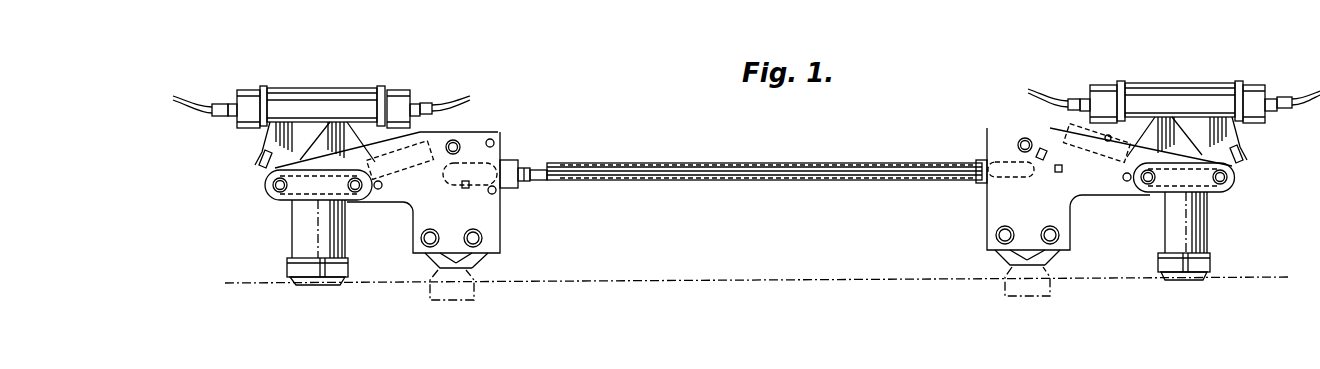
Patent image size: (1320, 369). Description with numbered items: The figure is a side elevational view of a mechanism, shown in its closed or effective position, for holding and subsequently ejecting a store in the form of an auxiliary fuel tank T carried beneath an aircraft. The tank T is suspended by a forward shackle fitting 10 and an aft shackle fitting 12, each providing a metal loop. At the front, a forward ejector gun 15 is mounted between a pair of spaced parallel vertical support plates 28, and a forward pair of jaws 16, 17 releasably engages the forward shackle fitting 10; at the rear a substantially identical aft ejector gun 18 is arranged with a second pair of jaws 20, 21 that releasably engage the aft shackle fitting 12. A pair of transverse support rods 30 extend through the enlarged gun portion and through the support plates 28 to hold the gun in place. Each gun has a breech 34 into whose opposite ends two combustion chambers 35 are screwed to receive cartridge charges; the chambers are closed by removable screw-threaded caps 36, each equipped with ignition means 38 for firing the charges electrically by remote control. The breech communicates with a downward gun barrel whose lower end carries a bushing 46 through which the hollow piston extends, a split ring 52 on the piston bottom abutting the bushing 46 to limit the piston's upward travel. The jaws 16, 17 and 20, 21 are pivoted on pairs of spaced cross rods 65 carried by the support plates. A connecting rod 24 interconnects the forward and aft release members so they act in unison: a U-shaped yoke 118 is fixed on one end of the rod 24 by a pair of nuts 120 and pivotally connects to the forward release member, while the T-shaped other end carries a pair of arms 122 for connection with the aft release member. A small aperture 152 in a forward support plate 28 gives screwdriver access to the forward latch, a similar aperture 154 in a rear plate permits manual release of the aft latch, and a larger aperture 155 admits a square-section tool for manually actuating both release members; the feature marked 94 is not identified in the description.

The auxiliary fuel tank T is at (767, 282).
The forward shackle fitting 10 is at (478, 275).
The aft shackle fitting 12 is at (1012, 272).
The forward ejector gun 15 is at (329, 82).
The forward jaw 16 is at (435, 263).
The forward jaw 17 is at (485, 252).
The aft ejector gun 18 is at (1167, 80).
The aft jaw 20 is at (1007, 258).
The aft jaw 21 is at (1045, 257).
The connecting rod 24 is at (738, 162).
The vertical support plates 28 is at (501, 141).
The transverse support rods 30 is at (280, 190).
The breech 34 is at (357, 94).
The combustion chambers 35 is at (264, 92).
The screw-threaded caps 36 is at (248, 92).
The ignition means 38 is at (218, 103).
The bushing 46 is at (287, 267).
The split ring 52 is at (297, 283).
The cross rods 65 is at (422, 234).
The opening 94 is at (456, 141).
The U-shaped yoke 118 is at (514, 160).
The nuts 120 is at (522, 185).
The arms 122 is at (980, 162).
The small aperture 152 is at (468, 190).
The aperture 154 is at (1058, 173).
The larger aperture 155 is at (1043, 148).